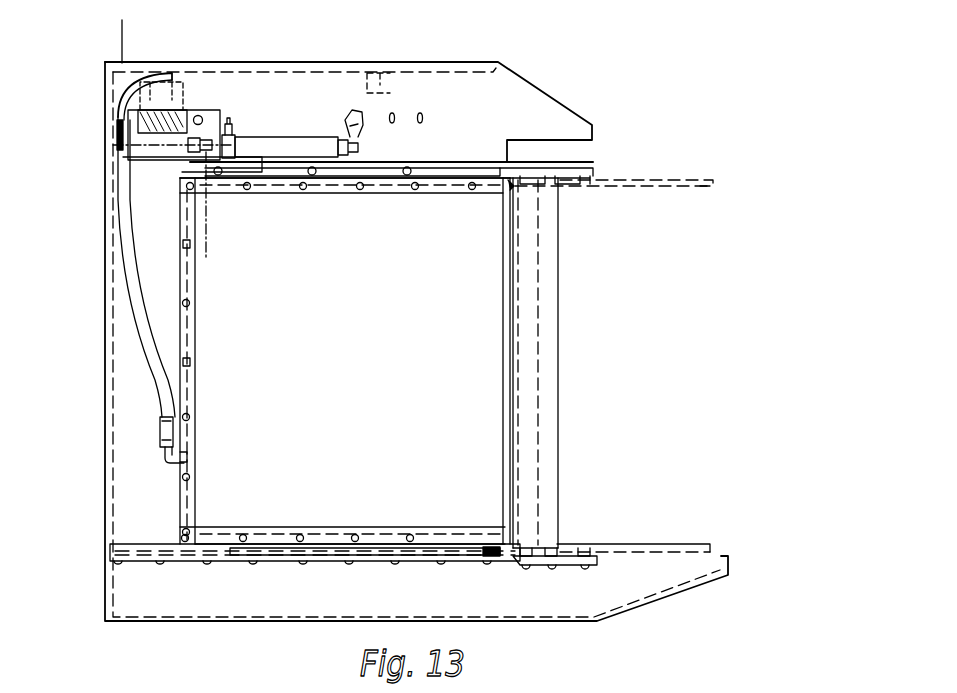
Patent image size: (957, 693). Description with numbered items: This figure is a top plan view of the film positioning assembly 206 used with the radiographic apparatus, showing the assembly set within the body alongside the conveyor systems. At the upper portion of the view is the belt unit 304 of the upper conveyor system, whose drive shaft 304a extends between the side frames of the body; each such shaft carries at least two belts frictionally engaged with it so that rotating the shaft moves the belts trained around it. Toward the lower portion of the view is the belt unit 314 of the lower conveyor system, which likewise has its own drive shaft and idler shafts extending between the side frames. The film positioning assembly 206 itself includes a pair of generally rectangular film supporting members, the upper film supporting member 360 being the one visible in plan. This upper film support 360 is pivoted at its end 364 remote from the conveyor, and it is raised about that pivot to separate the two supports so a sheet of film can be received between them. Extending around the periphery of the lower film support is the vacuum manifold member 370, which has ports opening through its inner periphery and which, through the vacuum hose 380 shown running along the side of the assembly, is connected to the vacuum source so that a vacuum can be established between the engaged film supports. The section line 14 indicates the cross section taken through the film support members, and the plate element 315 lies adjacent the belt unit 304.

The section line 14- 14 is at (98, 36).
The film positioning assembly 206 is at (98, 421).
The belt unit 304 is at (555, 276).
The drive shaft 304a is at (512, 441).
The belt unit 314 is at (590, 545).
The top plate 315 is at (624, 180).
The film supporting member 360 is at (416, 380).
The end 364 is at (192, 488).
The vacuum manifold member 370 is at (186, 513).
The vacuum hose 380 is at (145, 308).